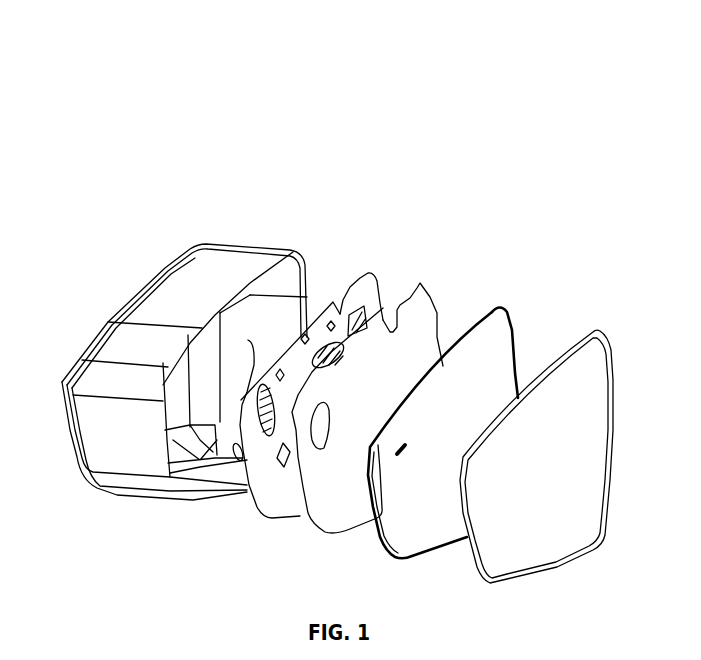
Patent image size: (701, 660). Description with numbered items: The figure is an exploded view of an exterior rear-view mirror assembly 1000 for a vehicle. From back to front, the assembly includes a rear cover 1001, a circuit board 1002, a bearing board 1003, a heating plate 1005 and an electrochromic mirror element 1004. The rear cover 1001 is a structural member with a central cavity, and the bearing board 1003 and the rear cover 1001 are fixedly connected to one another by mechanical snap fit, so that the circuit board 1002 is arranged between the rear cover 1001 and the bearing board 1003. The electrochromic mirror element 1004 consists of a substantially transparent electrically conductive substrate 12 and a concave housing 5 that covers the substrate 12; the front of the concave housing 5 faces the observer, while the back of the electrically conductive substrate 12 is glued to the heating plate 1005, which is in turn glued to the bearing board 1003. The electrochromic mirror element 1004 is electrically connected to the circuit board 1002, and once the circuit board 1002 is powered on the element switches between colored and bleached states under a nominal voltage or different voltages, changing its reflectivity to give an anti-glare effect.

The exterior rear-view mirror assembly 1000 is at (195, 77).
The rear cover 1001 is at (159, 268).
The circuit board 1002 is at (248, 338).
The bearing board 1003 is at (355, 276).
The heating plate 1005 is at (414, 284).
The electrochromic mirror element 1004 is at (572, 166).
The electrically conductive substrate 12 is at (478, 312).
The concave housing 5 is at (567, 332).